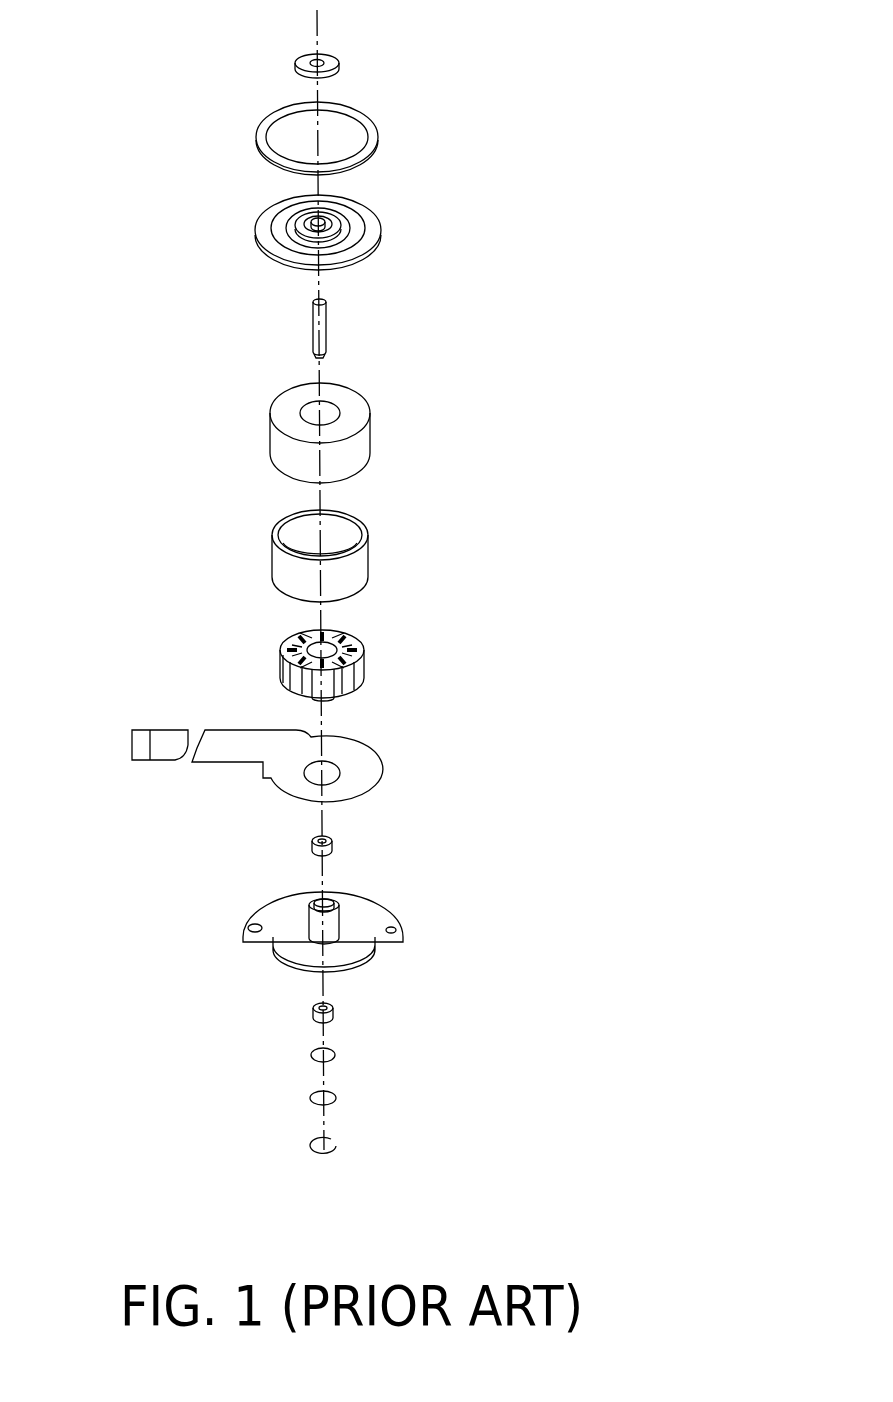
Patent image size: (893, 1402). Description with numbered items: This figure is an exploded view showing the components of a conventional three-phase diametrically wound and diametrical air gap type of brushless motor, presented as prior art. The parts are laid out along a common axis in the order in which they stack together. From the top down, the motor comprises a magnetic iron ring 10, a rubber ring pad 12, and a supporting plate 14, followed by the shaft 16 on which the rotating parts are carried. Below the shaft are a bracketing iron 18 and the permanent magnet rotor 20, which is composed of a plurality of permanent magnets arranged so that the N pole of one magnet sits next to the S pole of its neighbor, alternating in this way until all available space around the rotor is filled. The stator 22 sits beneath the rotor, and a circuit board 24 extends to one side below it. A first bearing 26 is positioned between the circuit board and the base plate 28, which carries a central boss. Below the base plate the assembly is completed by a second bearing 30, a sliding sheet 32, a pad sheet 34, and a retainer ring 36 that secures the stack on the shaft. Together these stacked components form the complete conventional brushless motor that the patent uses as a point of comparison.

The magnetic iron ring 10 is at (338, 62).
The rubber ring pad 12 is at (378, 136).
The supporting plate 14 is at (382, 228).
The shaft 16 is at (326, 325).
The bracketing iron 18 is at (370, 432).
The permanent magnet rotor 20 is at (368, 550).
The stator 22 is at (364, 660).
The circuit board 24 is at (148, 730).
The first bearing 26 is at (332, 843).
The base plate 28 is at (403, 920).
The second bearing 30 is at (333, 1010).
The sliding sheet 32 is at (335, 1053).
The pad sheet 34 is at (338, 1098).
The retainer ring 36 is at (338, 1142).